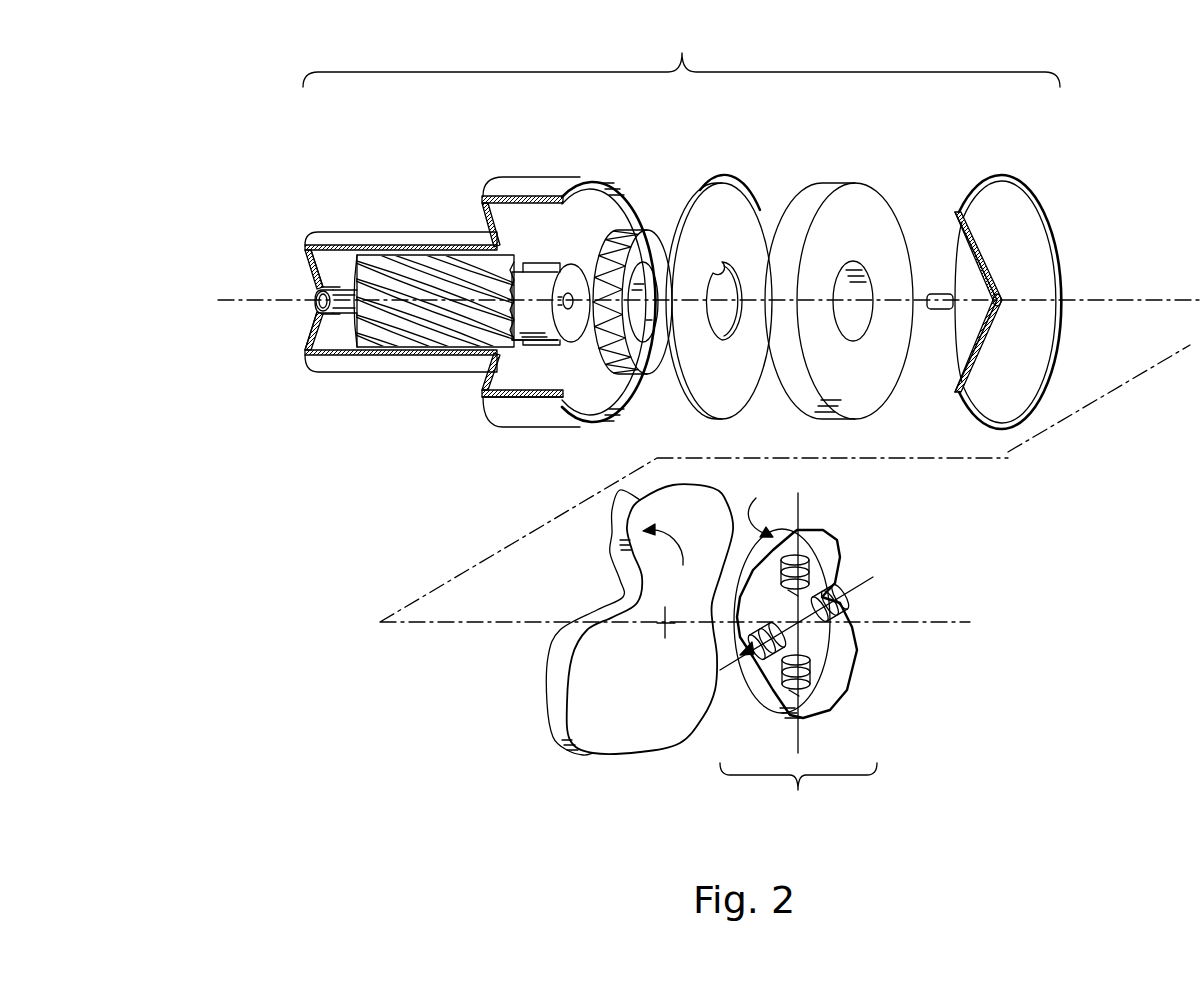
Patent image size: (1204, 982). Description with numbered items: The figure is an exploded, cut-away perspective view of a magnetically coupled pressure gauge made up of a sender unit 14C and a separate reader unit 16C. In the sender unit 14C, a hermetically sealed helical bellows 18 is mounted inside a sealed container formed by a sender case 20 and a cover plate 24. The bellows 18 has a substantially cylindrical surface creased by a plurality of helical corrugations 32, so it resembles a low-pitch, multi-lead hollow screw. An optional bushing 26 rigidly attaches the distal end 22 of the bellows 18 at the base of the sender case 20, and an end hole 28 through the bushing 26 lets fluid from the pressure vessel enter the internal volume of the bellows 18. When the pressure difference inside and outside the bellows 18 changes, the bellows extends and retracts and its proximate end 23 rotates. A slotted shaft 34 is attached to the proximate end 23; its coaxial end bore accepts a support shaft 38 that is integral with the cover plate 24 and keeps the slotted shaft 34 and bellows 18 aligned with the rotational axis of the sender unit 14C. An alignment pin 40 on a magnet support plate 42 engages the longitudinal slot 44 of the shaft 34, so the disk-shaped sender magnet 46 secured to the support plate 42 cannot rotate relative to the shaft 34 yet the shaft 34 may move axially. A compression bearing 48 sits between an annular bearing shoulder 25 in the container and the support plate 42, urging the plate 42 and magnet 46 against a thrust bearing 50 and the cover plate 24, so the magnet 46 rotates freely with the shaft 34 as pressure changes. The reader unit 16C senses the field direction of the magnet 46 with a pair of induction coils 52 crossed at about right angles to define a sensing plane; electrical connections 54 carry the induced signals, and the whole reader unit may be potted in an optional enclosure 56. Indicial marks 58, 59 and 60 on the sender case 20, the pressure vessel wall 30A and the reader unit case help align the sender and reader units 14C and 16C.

The sender unit 14C is at (681, 51).
The reader unit 16C is at (798, 799).
The helical bellows 18 is at (388, 252).
The sender case 20 is at (490, 197).
The distal end 22 is at (328, 280).
The proximate end 23 is at (564, 284).
The cover plate 24 is at (1057, 250).
The annular bearing shoulder 25 is at (482, 396).
The bushing 26 is at (312, 304).
The end hole 28 is at (352, 305).
The pressure vessel wall 30A is at (548, 727).
The helical corrugations 32 is at (440, 338).
The slotted shaft 34 is at (537, 346).
The support shaft 38 is at (944, 293).
The alignment pin 40 is at (716, 282).
The magnet support plate 42 is at (757, 193).
The longitudinal slot 44 is at (560, 284).
The sender magnet 46 is at (887, 203).
The compression bearing 48 is at (673, 278).
The thrust bearing 50 is at (955, 323).
The induction coils 52 is at (820, 692).
The electrical connections 54 is at (873, 577).
The enclosure 56 is at (835, 712).
The indicial mark 58 is at (560, 186).
The indicial mark 59 is at (677, 558).
The indicial mark 60 is at (767, 505).